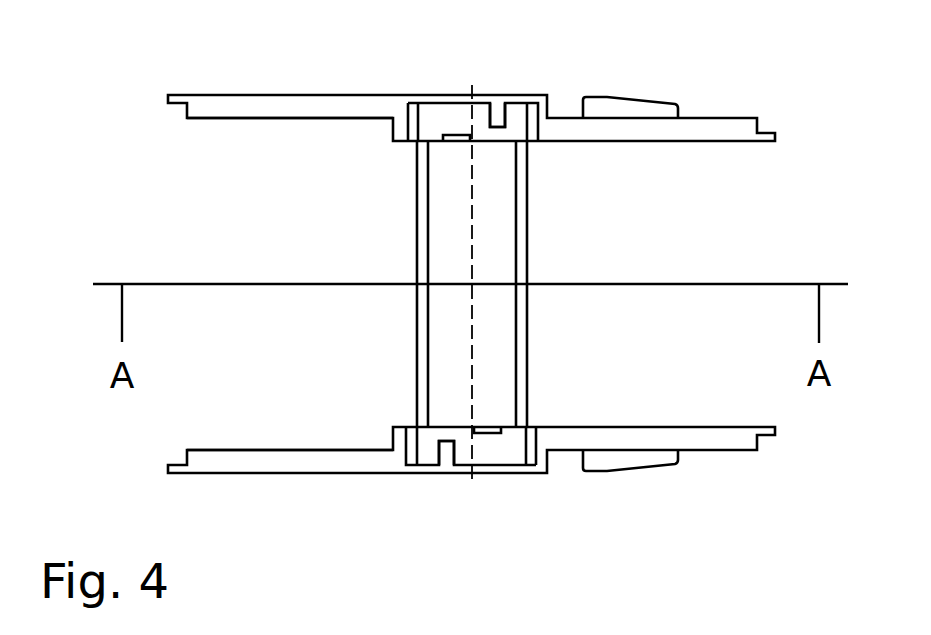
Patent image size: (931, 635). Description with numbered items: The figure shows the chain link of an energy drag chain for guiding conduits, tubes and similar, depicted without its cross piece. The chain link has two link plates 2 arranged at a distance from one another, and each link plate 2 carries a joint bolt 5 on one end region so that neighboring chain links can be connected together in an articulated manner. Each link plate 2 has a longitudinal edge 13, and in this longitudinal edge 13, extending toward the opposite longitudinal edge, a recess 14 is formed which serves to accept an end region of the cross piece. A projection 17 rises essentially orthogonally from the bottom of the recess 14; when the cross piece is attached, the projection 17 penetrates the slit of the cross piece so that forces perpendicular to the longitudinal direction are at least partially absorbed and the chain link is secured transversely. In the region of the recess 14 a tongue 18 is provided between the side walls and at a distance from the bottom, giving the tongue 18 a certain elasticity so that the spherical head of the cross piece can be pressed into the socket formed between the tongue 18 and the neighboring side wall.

The link plate 2 is at (213, 100).
The longitudinal edge 13 is at (330, 105).
The recess 14 is at (436, 118).
The projection 17 is at (452, 141).
The tongue 18 is at (500, 113).
The joint bolt 5 is at (635, 105).